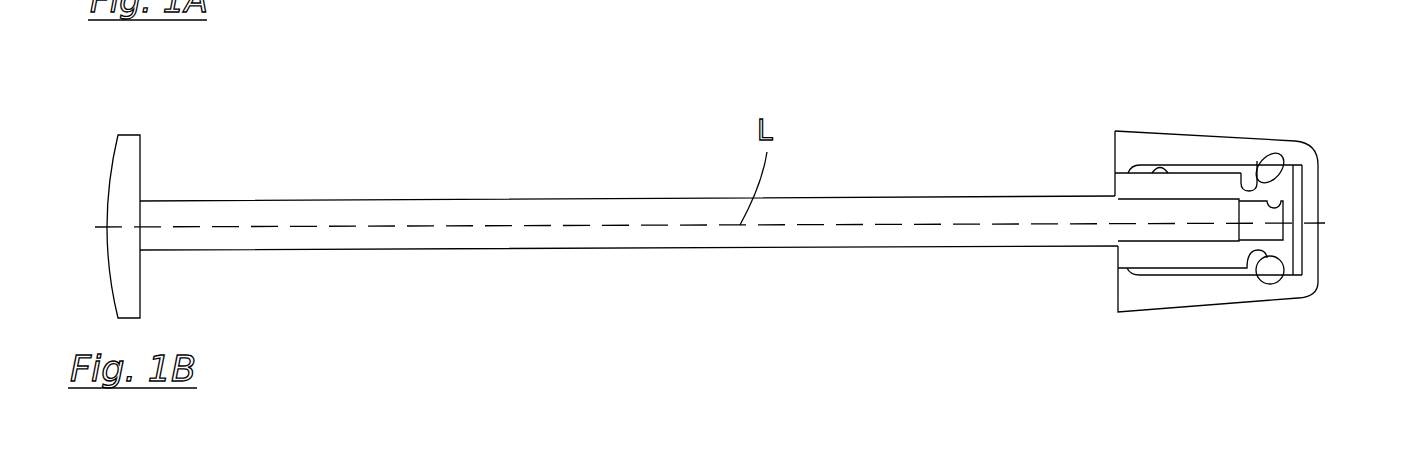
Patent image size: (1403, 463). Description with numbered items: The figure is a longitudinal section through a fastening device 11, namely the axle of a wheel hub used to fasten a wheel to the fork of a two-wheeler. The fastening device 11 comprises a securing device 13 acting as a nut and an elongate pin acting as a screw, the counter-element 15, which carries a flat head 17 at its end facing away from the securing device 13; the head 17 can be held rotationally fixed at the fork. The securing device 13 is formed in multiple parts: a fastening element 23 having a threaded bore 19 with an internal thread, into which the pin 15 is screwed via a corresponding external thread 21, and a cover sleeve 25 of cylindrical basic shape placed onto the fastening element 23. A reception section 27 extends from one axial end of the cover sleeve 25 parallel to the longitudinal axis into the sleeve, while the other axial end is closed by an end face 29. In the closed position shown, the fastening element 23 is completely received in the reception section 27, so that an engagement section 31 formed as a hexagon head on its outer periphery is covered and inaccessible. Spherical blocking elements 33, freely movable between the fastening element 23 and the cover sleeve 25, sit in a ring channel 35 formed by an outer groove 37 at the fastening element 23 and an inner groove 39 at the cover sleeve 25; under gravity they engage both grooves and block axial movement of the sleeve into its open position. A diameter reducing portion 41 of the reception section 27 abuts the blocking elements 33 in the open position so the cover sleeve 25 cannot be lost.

The fastening device 11 is at (500, 129).
The securing device 13 is at (1191, 107).
The counter-element 15 is at (335, 218).
The head 17 is at (134, 169).
The threaded bore 19 is at (1283, 212).
The external thread 21 is at (1141, 246).
The fastening element 23 is at (1182, 255).
The cover sleeve 25 is at (1155, 290).
The reception section 27 is at (1153, 166).
The end face 29 is at (1323, 252).
The engagement section 31 is at (1203, 172).
The blocking elements 33 is at (1275, 276).
The ring channel 35 is at (1258, 176).
The outer groove 37 is at (1266, 172).
The inner groove 39 is at (1272, 158).
The diameter reducing portion 41 is at (1116, 184).